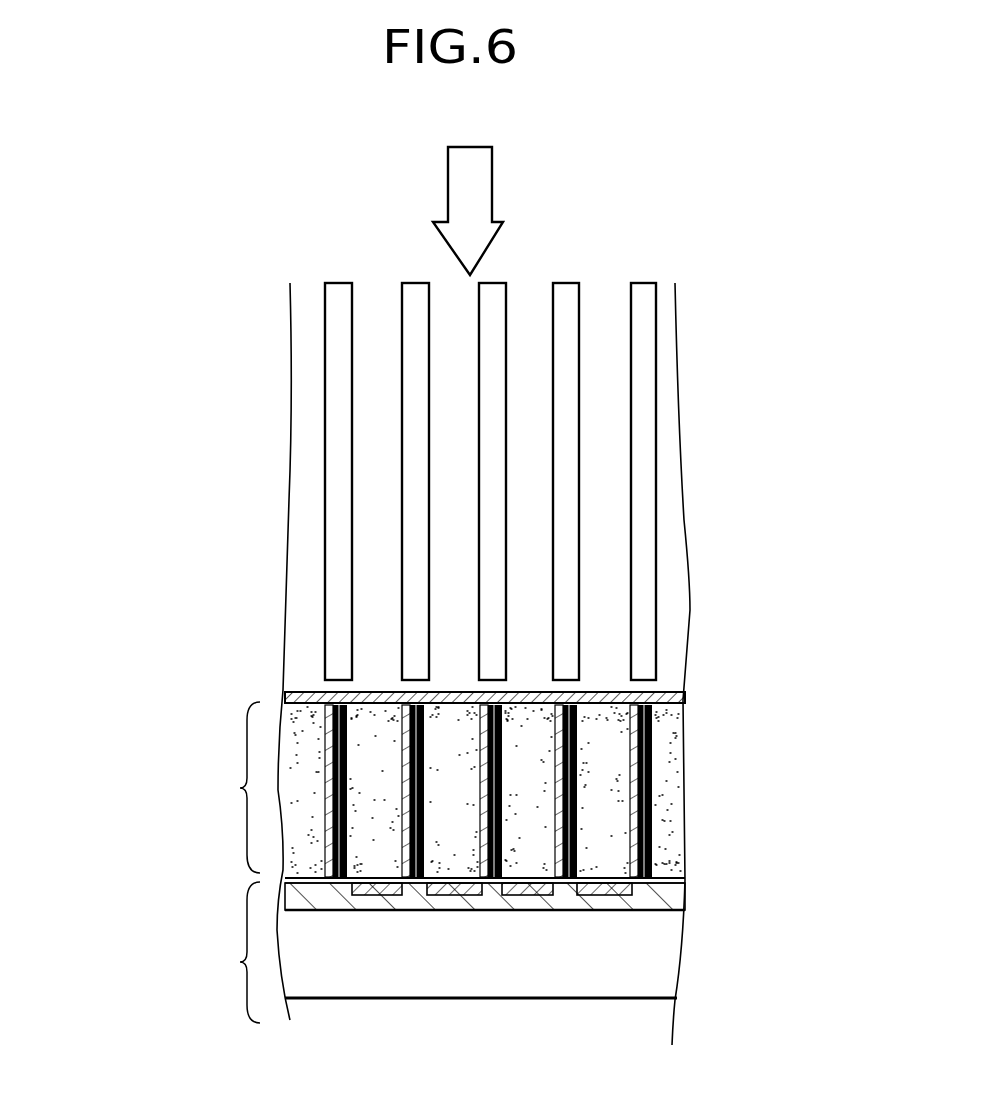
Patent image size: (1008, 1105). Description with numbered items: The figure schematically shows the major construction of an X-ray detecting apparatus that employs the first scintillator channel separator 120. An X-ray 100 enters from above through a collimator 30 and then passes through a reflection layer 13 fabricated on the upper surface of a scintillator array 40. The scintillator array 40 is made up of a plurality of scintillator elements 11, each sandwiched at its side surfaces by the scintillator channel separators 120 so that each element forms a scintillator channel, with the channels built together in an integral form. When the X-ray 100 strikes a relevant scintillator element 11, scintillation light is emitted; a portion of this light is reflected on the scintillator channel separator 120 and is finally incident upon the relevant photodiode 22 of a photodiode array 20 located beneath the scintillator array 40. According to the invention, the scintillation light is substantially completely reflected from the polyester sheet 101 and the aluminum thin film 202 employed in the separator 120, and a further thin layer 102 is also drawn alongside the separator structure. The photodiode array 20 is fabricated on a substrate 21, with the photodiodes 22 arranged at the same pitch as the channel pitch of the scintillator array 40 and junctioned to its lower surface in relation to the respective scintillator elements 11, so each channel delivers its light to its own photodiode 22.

The X-ray 100 is at (492, 200).
The collimator 30 is at (653, 418).
The reflection layer 13 is at (622, 695).
The scintillator array 40 is at (238, 807).
The first scintillator channel separator 120 is at (887, 745).
The scintillator element 11 is at (692, 931).
The polyester sheet 101 is at (656, 762).
The aluminum thin film 202 is at (648, 832).
The lower reflective layer 102 is at (570, 876).
The photodiode array 20 is at (238, 981).
The photodiode 22 is at (373, 912).
The substrate 21 is at (427, 990).